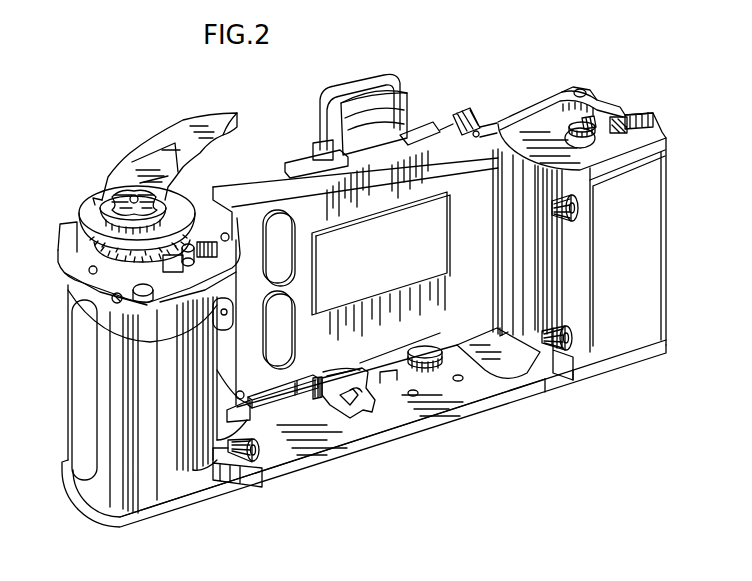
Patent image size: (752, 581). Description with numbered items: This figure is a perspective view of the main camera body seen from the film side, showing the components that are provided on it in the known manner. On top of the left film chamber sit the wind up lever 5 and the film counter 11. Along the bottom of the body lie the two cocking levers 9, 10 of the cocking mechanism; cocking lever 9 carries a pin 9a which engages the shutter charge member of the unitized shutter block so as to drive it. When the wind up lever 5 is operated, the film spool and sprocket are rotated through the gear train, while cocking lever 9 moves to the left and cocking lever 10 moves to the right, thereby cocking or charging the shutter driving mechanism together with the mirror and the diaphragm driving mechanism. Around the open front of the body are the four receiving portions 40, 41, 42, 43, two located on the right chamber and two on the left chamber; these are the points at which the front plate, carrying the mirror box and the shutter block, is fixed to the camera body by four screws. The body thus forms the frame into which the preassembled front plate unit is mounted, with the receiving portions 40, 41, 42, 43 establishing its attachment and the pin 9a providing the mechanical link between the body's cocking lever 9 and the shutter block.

The wind up lever 5 is at (193, 124).
The film counter 11 is at (93, 210).
The receiving portion 42 is at (213, 318).
The receiving portion 43 is at (253, 467).
The pin 9a is at (317, 400).
The cocking lever 10 is at (360, 410).
The cocking lever 9 is at (390, 397).
The receiving portion 41 is at (578, 210).
The receiving portion 40 is at (573, 342).